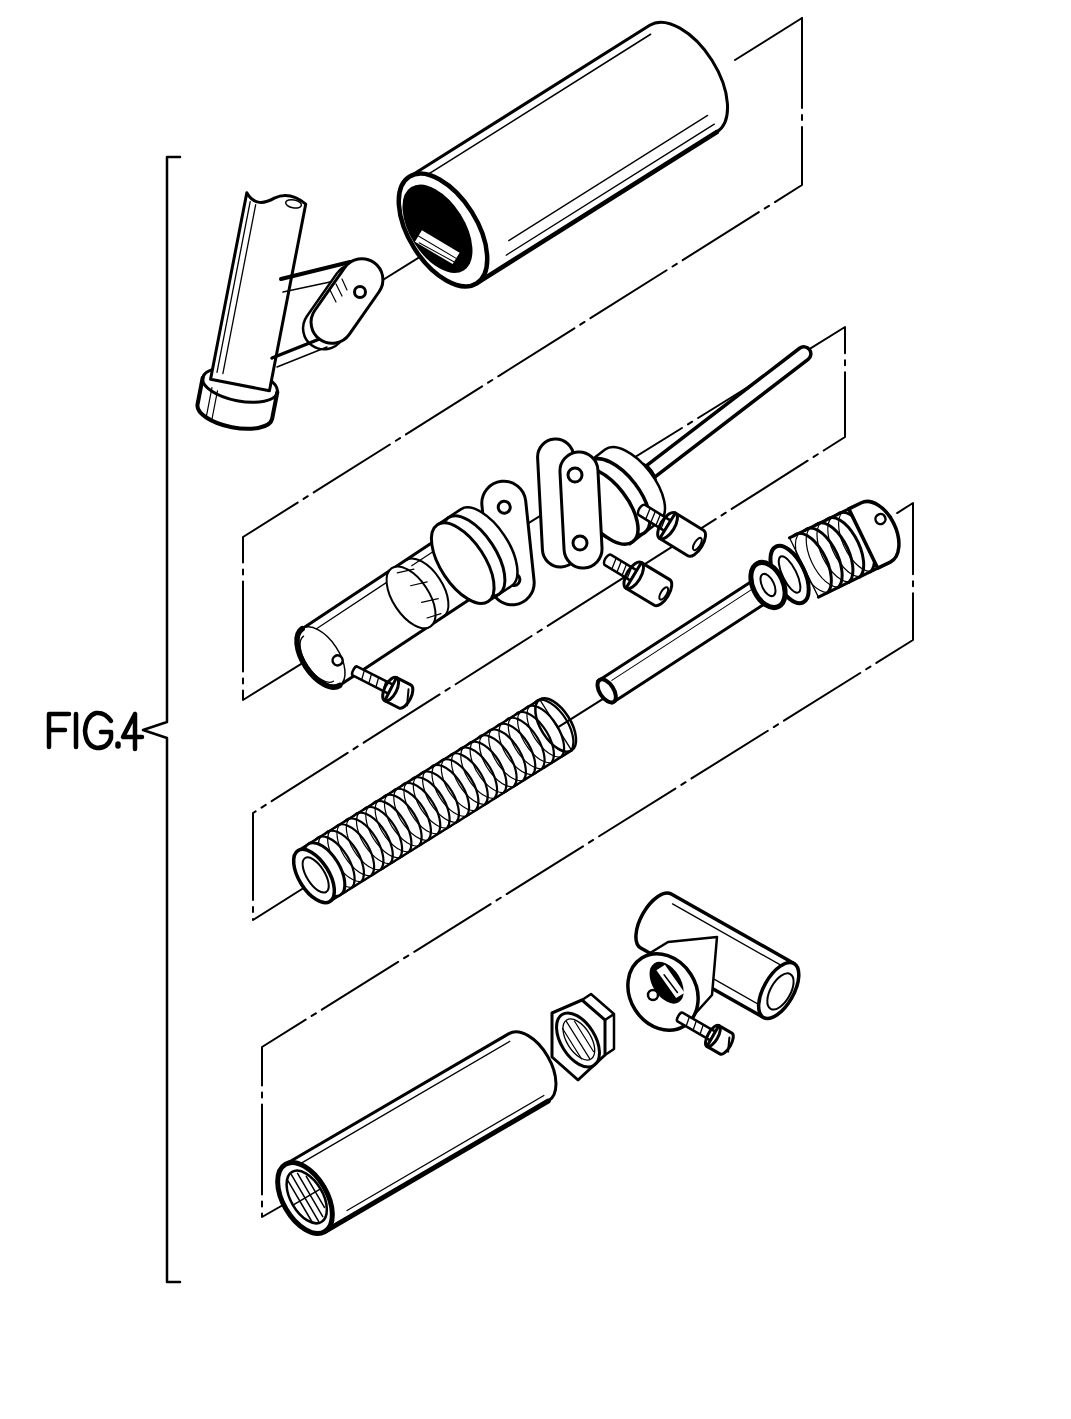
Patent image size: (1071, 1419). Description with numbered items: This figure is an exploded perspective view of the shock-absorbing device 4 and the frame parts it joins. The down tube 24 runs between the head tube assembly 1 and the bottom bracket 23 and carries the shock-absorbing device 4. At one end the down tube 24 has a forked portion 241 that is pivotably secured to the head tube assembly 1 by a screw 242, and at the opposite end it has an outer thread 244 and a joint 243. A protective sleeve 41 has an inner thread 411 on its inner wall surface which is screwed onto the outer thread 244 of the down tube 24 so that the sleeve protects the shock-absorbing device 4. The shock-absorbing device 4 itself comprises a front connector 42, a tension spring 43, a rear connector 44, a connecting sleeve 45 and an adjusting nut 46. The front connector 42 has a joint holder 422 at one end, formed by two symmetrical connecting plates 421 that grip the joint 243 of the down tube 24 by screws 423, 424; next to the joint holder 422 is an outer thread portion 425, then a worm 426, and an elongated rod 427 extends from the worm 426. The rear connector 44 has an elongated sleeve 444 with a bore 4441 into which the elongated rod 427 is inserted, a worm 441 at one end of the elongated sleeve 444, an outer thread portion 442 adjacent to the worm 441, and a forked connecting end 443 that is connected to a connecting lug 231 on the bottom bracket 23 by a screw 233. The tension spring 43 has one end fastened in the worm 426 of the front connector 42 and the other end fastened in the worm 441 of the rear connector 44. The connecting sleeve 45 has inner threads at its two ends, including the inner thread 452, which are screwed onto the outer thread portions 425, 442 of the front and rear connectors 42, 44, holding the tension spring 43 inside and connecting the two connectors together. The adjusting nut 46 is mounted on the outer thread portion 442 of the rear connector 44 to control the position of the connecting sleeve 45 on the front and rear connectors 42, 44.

The head tube assembly 1 is at (236, 270).
The shock-absorbing device 4 is at (757, 356).
The bottom bracket 23 is at (710, 992).
The connecting lug 231 is at (660, 997).
The screw 233 is at (700, 1040).
The down tube 24 is at (408, 592).
The forked portion 241 is at (321, 657).
The screw 242 is at (365, 703).
The joint 243 is at (478, 492).
The outer thread 244 is at (474, 555).
The protective sleeve 41 is at (549, 157).
The inner thread 411 is at (428, 226).
The front connector 42 is at (634, 501).
The connecting plate 421 is at (556, 445).
The joint holder 422 is at (619, 495).
The screw 423 is at (686, 556).
The screw 424 is at (640, 604).
The outer thread portion 425 is at (627, 482).
The worm 426 is at (641, 479).
The elongated rod 427 is at (702, 426).
The tension spring 43 is at (432, 853).
The rear connector 44 is at (689, 592).
The worm 441 is at (779, 579).
The outer thread portion 442 is at (835, 552).
The forked connecting end 443 is at (878, 531).
The elongated sleeve 444 is at (680, 643).
The bore 4441 is at (607, 690).
The connecting sleeve 45 is at (401, 1157).
The inner thread 452 is at (306, 1197).
The adjusting nut 46 is at (570, 1004).